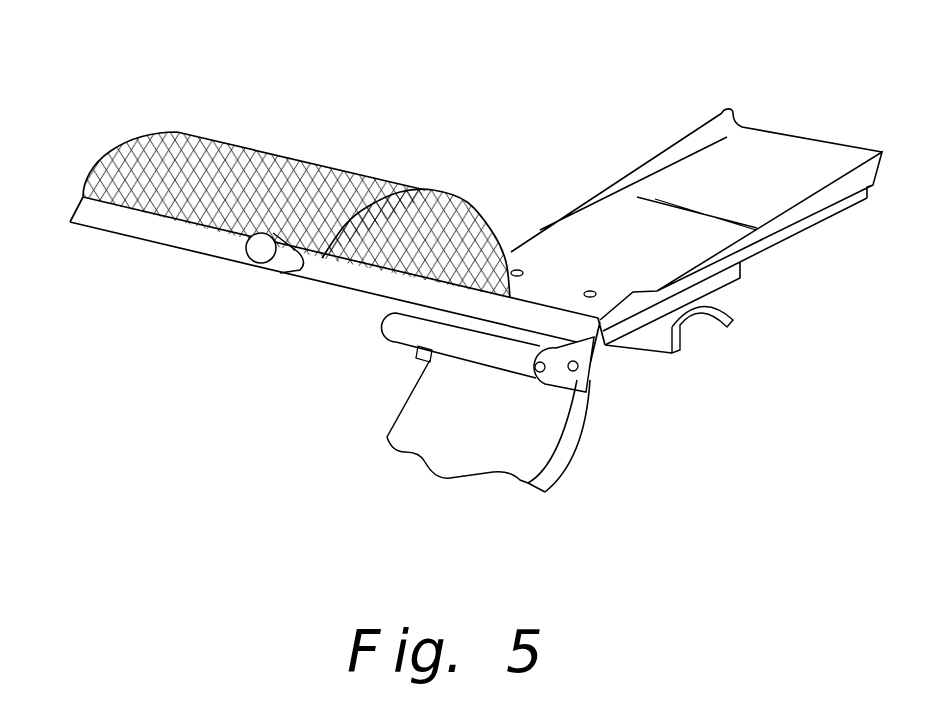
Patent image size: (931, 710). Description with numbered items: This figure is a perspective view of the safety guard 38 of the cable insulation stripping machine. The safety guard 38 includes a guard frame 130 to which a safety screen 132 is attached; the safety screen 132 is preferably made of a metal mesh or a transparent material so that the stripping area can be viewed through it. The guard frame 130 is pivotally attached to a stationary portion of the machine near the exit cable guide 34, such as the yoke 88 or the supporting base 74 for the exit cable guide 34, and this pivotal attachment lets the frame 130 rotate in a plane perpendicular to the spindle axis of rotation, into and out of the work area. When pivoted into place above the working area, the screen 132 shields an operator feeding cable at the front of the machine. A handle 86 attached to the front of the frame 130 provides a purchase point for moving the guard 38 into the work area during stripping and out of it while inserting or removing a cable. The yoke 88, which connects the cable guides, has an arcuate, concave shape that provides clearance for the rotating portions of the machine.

The exit cable tray or guide 34 is at (497, 157).
The safety guard 38 is at (49, 173).
The guide base 74 is at (721, 279).
The handle 86 is at (258, 258).
The yoke 88 is at (572, 452).
The guard frame 130 is at (367, 275).
The safety screen 132 is at (253, 148).